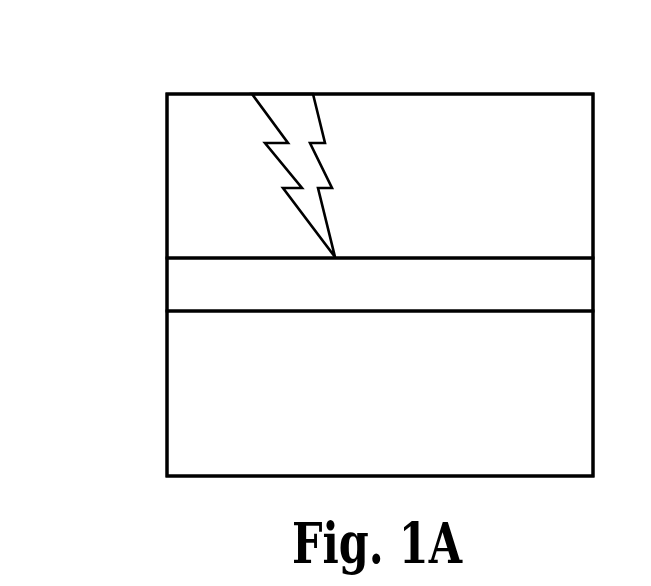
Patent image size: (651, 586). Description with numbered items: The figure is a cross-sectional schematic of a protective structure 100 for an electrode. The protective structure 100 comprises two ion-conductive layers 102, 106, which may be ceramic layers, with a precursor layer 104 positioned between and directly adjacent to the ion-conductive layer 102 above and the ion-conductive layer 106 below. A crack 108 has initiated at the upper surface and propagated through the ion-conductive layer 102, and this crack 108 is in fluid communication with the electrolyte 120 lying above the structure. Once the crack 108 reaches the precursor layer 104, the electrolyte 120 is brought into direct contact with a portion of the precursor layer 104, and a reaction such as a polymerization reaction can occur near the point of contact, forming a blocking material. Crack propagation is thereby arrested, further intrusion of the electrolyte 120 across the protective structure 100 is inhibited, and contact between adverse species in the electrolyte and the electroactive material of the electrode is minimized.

The protective structure 100 is at (45, 101).
The ion-conductive layer 102 is at (493, 183).
The precursor layer 104 is at (493, 297).
The ion-conductive layer 106 is at (493, 403).
The crack 108 is at (290, 110).
The electrolyte 120 is at (403, 49).